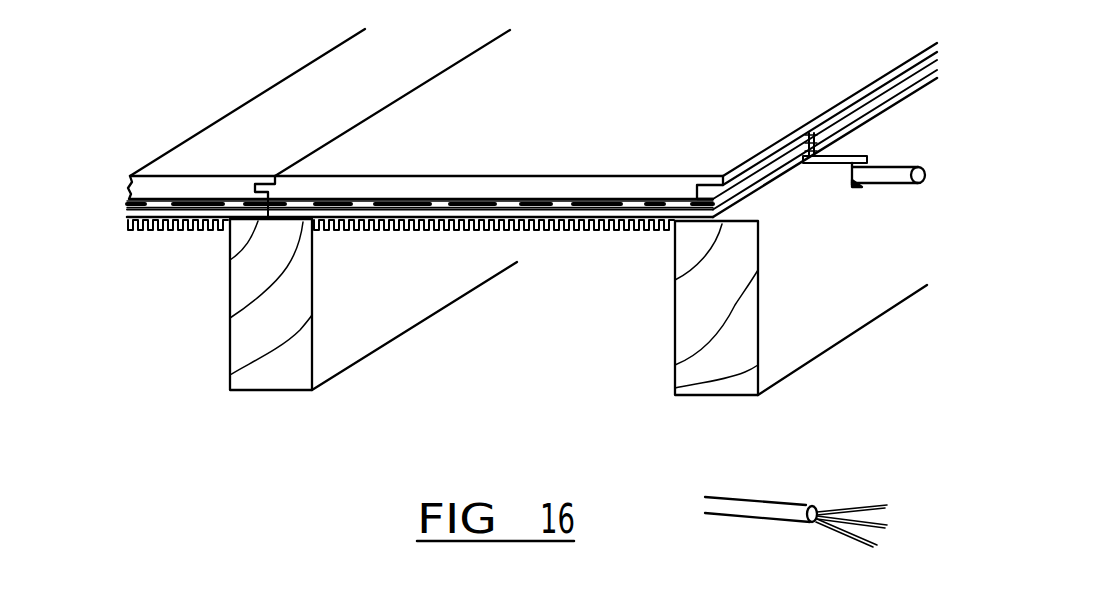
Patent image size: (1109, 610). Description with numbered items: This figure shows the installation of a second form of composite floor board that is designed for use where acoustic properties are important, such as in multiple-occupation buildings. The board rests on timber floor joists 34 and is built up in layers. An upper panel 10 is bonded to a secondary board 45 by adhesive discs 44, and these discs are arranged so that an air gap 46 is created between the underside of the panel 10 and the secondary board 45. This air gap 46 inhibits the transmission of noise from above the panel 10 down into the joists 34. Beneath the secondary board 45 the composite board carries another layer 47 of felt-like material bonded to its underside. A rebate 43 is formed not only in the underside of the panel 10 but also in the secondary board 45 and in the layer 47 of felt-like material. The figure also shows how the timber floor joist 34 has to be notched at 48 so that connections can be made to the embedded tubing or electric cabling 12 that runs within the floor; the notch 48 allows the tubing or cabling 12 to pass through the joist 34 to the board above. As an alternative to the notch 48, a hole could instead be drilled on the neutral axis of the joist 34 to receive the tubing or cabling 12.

The panel 10 is at (630, 191).
The tubing or electric cabling 12 is at (892, 186).
The joists 34 is at (245, 343).
The rebate 43 is at (803, 153).
The adhesive discs 44 is at (440, 200).
The secondary board 45 is at (540, 219).
The air gap 46 is at (541, 212).
The layer of felt-like material 47 is at (630, 236).
The notch 48 is at (846, 174).